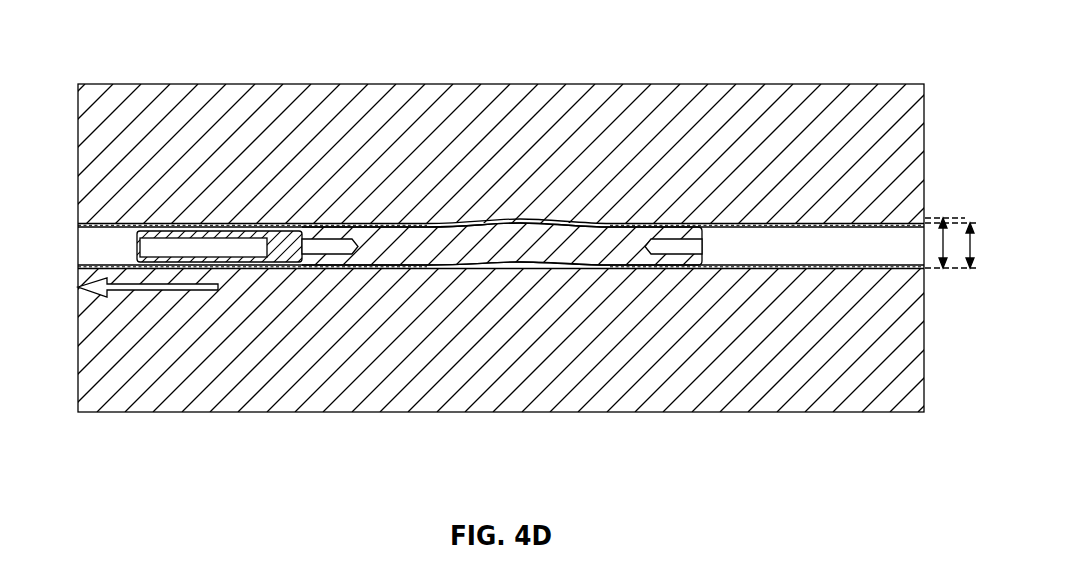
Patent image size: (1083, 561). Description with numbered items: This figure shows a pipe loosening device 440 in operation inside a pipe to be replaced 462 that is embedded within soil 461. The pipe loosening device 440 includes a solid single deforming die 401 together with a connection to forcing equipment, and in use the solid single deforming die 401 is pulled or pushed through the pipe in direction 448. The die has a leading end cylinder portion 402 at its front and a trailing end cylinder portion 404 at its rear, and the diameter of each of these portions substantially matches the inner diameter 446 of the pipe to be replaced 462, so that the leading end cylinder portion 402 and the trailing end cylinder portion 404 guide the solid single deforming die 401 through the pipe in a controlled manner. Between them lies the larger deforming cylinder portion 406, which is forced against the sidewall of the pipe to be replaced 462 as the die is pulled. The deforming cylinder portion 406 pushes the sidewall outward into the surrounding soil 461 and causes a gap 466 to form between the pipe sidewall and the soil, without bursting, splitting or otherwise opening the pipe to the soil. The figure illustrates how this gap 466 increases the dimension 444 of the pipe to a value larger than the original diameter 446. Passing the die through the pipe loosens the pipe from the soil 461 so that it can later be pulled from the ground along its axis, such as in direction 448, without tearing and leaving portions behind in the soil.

The solid single deforming die 401 is at (520, 210).
The leading end cylinder portion 402 is at (348, 223).
The trailing end cylinder portion 404 is at (683, 222).
The deforming cylinder portion 406 is at (553, 222).
The pipe loosening device 440 is at (742, 415).
The dimension 444 is at (942, 220).
The inner diameter of the pipe to be replaced 446 is at (963, 270).
The direction 448 is at (127, 292).
The soil 461 is at (324, 370).
The pipe to be replaced 462 is at (853, 222).
The gap 466 is at (801, 222).